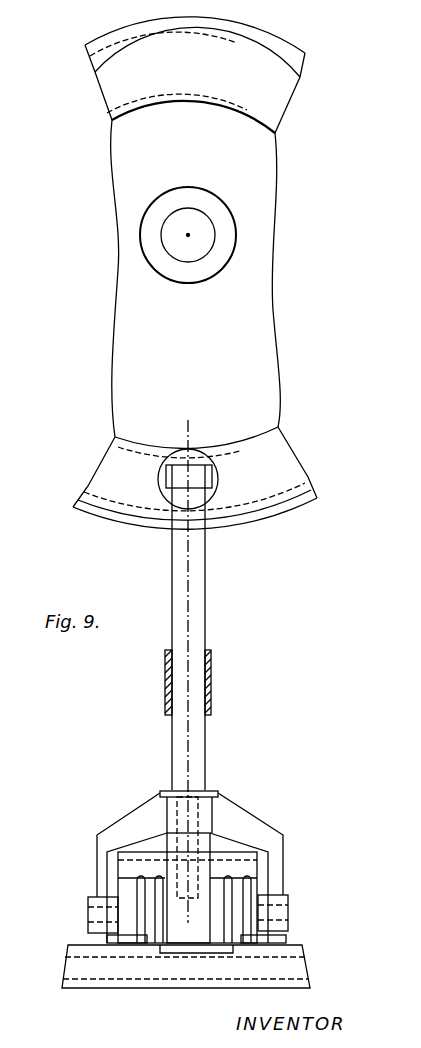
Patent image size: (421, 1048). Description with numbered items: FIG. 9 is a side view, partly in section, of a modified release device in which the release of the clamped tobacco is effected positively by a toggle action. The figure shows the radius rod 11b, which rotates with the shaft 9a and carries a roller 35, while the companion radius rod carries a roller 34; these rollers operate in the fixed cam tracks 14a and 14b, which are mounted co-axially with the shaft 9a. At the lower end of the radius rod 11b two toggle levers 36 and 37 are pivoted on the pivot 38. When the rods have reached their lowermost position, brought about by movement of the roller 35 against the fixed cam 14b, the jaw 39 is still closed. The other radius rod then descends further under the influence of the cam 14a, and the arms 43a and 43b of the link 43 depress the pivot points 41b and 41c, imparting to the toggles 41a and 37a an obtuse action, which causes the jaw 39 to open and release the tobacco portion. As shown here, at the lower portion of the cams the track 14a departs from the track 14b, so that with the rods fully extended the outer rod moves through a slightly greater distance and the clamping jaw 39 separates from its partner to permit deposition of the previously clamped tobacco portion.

The cam track 14a is at (93, 58).
The cam track 14b is at (95, 78).
The shaft 9a is at (190, 230).
The roller 35 is at (199, 450).
The roller 34 is at (165, 526).
The radius rod 11b is at (197, 615).
The link 43 is at (218, 792).
The arm of link 43a is at (250, 823).
The arm of link 43b is at (147, 815).
The pivot 38 is at (258, 860).
The toggle lever 36 is at (242, 900).
The toggle lever 37 is at (140, 880).
The pivot point 41c is at (92, 905).
The pivot point 41b is at (288, 912).
The toggle 41a is at (272, 936).
The toggle 37a is at (105, 935).
The jaw 39 is at (300, 962).